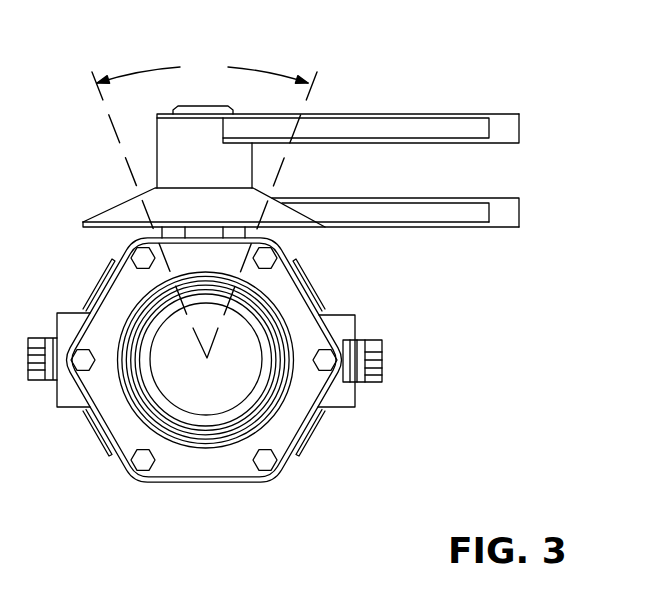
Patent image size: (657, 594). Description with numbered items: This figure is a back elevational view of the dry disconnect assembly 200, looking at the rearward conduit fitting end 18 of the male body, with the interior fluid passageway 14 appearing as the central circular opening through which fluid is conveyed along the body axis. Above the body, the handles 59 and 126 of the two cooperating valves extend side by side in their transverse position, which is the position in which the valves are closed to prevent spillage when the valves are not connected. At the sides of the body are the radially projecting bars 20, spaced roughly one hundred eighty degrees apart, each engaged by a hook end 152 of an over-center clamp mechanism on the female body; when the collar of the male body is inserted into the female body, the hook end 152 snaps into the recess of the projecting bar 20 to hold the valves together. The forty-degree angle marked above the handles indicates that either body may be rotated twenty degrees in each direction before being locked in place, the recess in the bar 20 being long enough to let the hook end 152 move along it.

The disconnect assembly 200 is at (326, 316).
The handle 59 is at (480, 114).
The handle 126 is at (490, 198).
The conduit fitting end 18 is at (122, 432).
The fluid passageway 14 is at (198, 400).
The projecting bar 20 is at (353, 403).
The hook end 152 is at (363, 383).